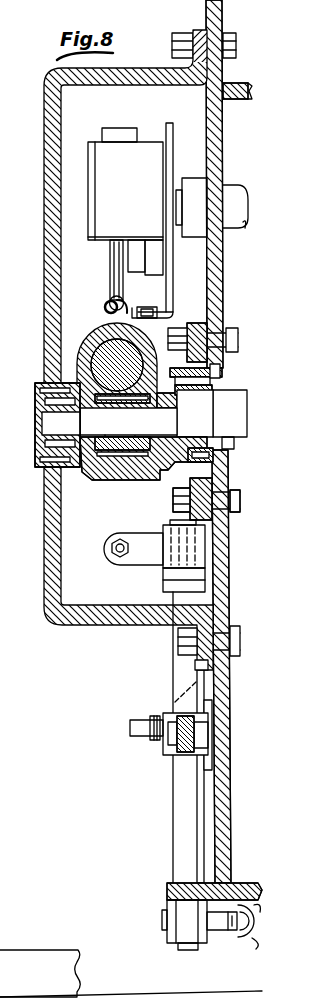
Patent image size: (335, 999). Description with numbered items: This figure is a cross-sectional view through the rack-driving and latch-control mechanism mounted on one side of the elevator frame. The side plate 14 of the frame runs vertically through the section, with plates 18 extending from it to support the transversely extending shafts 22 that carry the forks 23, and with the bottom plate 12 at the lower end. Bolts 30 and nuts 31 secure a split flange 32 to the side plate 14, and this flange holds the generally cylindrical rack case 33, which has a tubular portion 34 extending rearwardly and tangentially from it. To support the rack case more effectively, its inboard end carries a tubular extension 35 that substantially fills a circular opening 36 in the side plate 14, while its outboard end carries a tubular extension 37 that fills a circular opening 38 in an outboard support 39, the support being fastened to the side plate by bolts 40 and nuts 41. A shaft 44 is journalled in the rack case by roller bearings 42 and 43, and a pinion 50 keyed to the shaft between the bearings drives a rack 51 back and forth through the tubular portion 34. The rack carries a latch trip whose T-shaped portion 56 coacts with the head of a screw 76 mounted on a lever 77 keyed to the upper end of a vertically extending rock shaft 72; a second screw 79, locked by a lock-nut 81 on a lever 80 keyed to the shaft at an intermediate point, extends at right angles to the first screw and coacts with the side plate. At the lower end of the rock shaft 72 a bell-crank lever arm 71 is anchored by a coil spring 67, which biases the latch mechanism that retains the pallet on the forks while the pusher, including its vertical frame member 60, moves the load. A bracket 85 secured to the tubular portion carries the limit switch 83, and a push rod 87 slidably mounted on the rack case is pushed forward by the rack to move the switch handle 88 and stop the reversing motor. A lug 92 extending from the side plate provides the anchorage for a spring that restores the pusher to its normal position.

The bottom plate 12 is at (172, 893).
The side plate 14 is at (231, 773).
The plates 18 is at (231, 103).
The transversely extending shafts 22 is at (238, 196).
The forks 23 is at (33, 958).
The bolts 30 is at (243, 500).
The nuts 31 is at (178, 510).
The split flange 32 is at (196, 325).
The rack case 33 is at (84, 478).
The tubular portion 34 is at (98, 335).
The tubular extension 35 is at (225, 468).
The circular opening 36 is at (221, 373).
The tubular extension 37 is at (73, 372).
The circular opening 38 is at (45, 463).
The outboard support 39 is at (46, 598).
The bolts 40 is at (244, 630).
The nuts 41 is at (180, 655).
The roller bearing 42 is at (193, 392).
The roller bearing 43 is at (62, 415).
The shaft 44 is at (246, 436).
The pinion 50 is at (127, 456).
The rack 51 is at (158, 312).
The latch trip portion 56 is at (0, 506).
The vertical frame member 60 is at (170, 938).
The coil spring 67 is at (248, 940).
The bell-crank lever arm 71 is at (222, 932).
The rock shaft 72 is at (178, 838).
The screw 76 is at (110, 560).
The lever 77 is at (152, 555).
The screw 79 is at (208, 752).
The lever 80 is at (185, 757).
The lock-nut 81 is at (163, 745).
The limit switch 83 is at (112, 187).
The bracket 85 is at (168, 220).
The push rod 87 is at (104, 300).
The switch handle 88 is at (109, 262).
The lug 92 is at (128, 727).